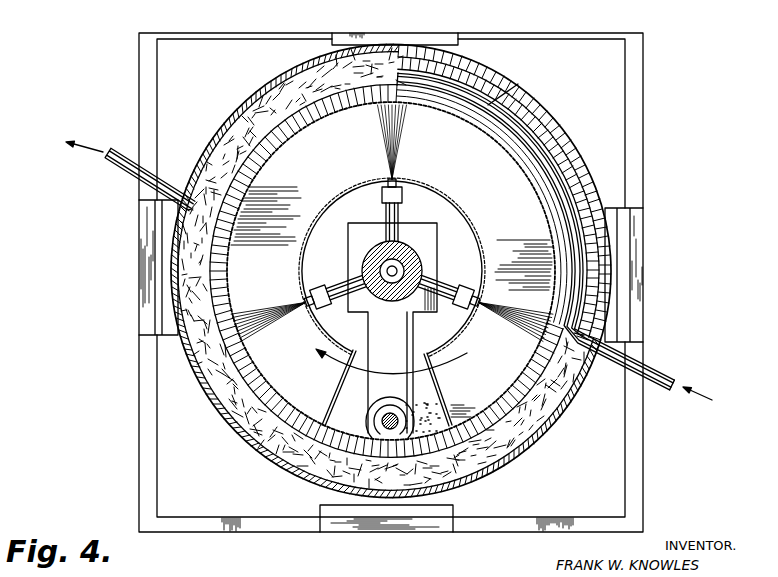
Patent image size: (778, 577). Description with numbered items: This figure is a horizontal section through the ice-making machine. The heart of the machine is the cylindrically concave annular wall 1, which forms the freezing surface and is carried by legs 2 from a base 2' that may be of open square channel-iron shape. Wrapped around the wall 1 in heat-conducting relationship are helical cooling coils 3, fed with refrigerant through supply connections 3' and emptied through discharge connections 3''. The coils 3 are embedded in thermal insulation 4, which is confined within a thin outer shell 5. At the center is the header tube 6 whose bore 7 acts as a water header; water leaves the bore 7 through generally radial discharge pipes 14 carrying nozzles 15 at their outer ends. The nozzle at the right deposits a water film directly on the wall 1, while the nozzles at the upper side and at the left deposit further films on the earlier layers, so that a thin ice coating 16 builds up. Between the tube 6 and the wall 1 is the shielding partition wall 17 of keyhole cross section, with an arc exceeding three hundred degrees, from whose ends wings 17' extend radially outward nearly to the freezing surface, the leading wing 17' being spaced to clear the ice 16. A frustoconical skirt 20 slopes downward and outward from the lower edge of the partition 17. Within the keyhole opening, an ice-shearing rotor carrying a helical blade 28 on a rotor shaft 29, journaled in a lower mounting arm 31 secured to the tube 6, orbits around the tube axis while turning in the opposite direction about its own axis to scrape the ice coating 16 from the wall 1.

The cylindrically concave annular wall 1 is at (546, 183).
The legs 2 is at (387, 282).
The base 2' is at (391, 282).
The cooling coils 3 is at (535, 223).
The supply connections 3' is at (690, 370).
The discharge connections 3'' is at (130, 164).
The thermal insulation 4 is at (273, 98).
The outer shell 5 is at (548, 111).
The central header tube 6 is at (405, 248).
The bore 7 is at (401, 268).
The discharge pipes 14 is at (388, 215).
The nozzles 15 is at (404, 186).
The ice coating 16 is at (224, 268).
The shielding partition wall 17 is at (515, 243).
The wings 17' is at (401, 387).
The frustoconical skirt 20 is at (340, 165).
The helical blade 28 is at (362, 427).
The rotor shaft 29 is at (396, 419).
The lower mounting arm 31 is at (399, 363).